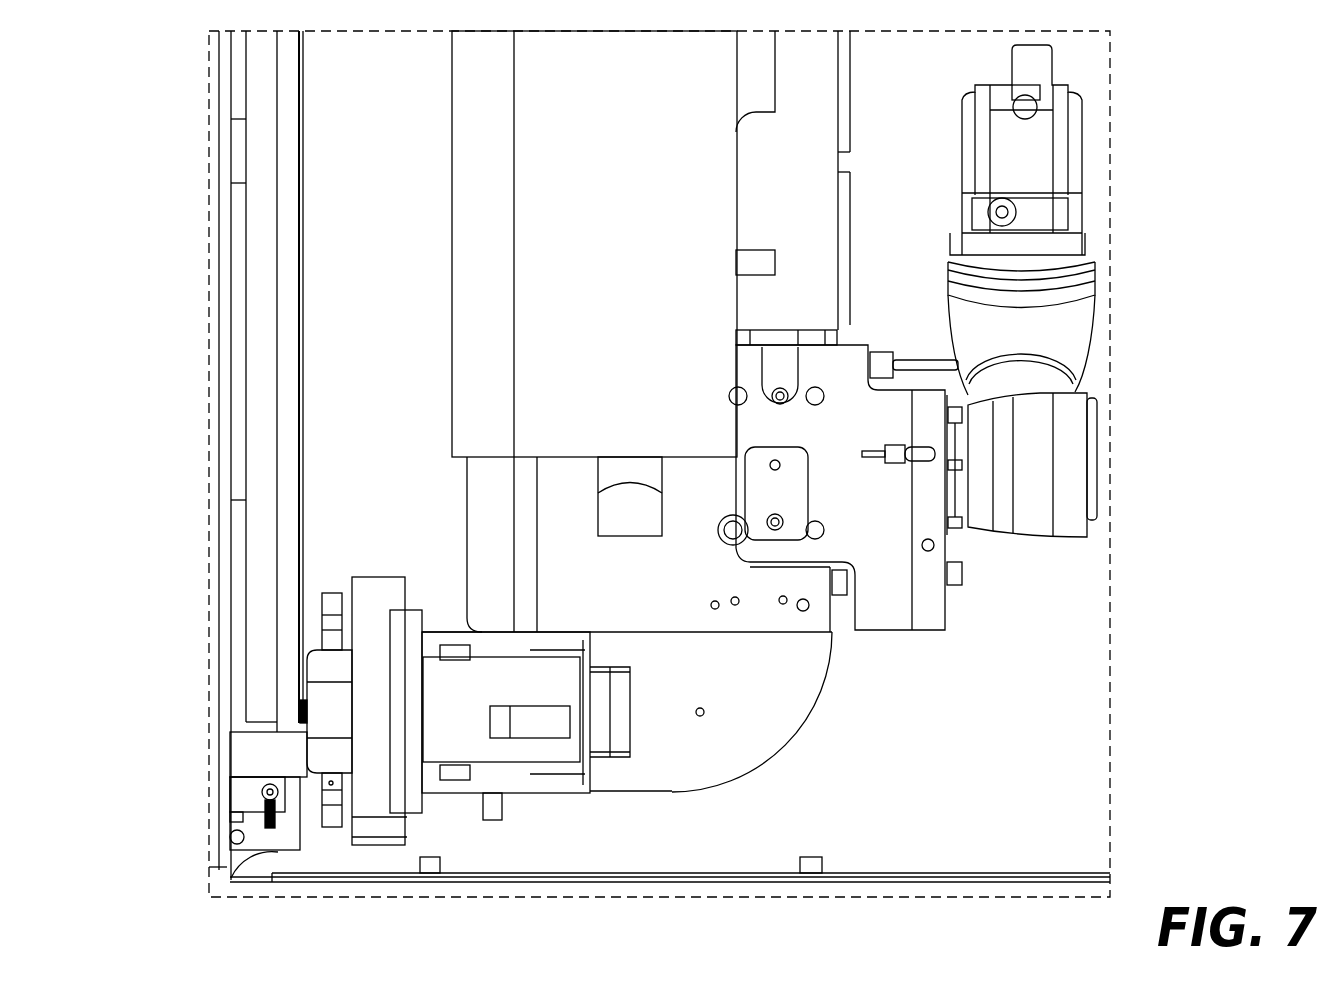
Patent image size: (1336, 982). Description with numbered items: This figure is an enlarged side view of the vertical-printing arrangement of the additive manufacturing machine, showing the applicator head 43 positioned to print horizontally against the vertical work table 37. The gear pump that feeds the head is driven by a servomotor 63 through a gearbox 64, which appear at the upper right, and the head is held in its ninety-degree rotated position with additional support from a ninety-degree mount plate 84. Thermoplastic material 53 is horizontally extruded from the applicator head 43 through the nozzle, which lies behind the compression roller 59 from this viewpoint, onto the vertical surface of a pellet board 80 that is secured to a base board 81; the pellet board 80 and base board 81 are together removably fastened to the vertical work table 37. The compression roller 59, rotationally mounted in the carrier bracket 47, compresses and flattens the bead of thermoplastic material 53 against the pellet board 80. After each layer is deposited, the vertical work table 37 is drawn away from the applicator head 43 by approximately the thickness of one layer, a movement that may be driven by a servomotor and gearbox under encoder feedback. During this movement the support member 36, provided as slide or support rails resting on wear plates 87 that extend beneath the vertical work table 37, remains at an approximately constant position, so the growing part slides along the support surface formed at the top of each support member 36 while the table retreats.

The support member 36 is at (260, 753).
The vertical work table 37 is at (238, 535).
The applicator head 43 is at (395, 684).
The carrier bracket 47 is at (320, 790).
The thermoplastic material 53 is at (300, 727).
The compression roller 59 is at (327, 705).
The servomotor 63 is at (1027, 135).
The gearbox 64 is at (1072, 457).
The pellet board 80 is at (300, 595).
The base board 81 is at (262, 482).
The 90° mount plate 84 is at (737, 700).
The wear plate 87 is at (930, 877).